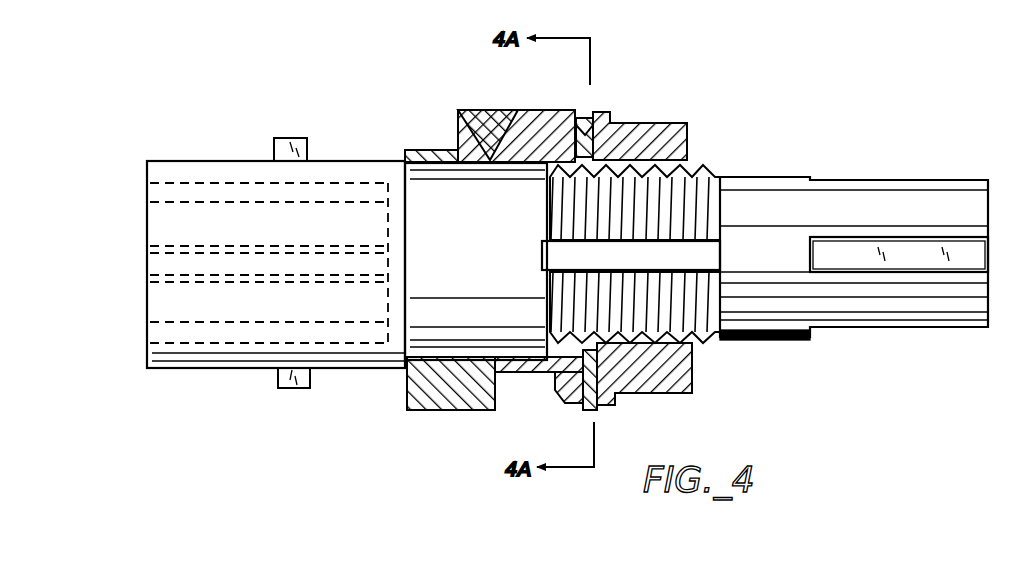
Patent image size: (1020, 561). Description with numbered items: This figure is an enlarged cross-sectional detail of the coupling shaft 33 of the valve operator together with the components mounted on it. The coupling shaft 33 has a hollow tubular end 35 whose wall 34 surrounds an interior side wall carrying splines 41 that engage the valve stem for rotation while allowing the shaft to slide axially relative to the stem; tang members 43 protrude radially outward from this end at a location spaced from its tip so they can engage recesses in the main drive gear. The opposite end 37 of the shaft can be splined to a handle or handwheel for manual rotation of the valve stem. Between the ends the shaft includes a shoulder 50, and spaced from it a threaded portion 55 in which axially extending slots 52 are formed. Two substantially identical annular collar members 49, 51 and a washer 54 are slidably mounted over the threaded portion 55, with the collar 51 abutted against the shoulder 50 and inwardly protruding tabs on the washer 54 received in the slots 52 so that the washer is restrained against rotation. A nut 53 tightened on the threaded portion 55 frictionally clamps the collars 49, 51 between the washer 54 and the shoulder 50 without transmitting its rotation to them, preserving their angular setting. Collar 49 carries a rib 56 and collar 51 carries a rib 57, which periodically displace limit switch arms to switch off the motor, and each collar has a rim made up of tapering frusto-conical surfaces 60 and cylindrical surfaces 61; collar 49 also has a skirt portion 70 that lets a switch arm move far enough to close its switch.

The coupling shaft 33 is at (800, 176).
The wall 34 is at (388, 290).
The end 35 is at (147, 172).
The opposite end 37 is at (845, 250).
The splines 41 is at (222, 182).
The tang members 43 is at (280, 138).
The annular collar member 49 is at (560, 110).
The shoulder 50 is at (405, 240).
The annular collar member 51 is at (405, 160).
The axially extending slots 52 is at (705, 262).
The nut 53 is at (660, 123).
The washer 54 is at (585, 118).
The threaded portion 55 is at (700, 177).
The rib 56 is at (575, 120).
The rib 57 is at (425, 410).
The frusto-conical surfaces 60 is at (466, 112).
The cylindrical surfaces 61 is at (482, 108).
The skirt portion 70 is at (435, 150).